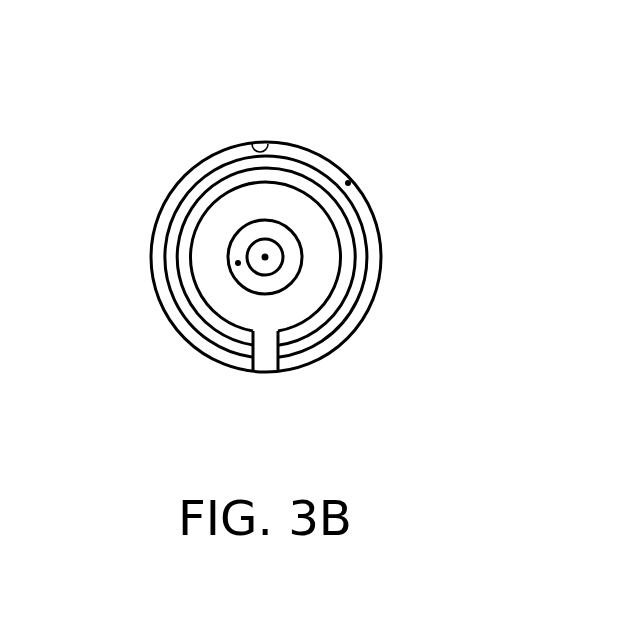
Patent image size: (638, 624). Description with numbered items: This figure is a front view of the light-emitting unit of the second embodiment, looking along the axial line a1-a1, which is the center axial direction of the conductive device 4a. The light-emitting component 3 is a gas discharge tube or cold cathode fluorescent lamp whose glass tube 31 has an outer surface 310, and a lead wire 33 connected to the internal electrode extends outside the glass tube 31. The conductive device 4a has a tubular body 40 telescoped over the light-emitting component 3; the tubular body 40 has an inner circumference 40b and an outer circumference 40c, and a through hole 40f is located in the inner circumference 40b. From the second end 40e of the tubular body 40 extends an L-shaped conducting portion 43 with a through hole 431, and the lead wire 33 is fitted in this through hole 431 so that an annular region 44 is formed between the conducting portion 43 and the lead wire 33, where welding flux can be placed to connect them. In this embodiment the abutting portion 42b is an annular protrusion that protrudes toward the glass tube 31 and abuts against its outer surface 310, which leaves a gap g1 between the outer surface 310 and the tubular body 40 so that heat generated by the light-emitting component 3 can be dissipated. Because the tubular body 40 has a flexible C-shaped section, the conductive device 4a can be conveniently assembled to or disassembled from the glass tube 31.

The conductive device 4a is at (220, 143).
The light-emitting component 3 is at (202, 182).
The tubular body 40 is at (329, 357).
The glass tube 31 is at (325, 166).
The outer circumference 40c is at (297, 178).
The outer surface 310 is at (188, 299).
The conducting portion 43 is at (267, 348).
The inner circumference 40b is at (269, 158).
The second end 40e is at (348, 183).
The through hole 40f is at (175, 400).
The gap g1 is at (175, 400).
The abutting portion 42b is at (226, 346).
The through hole 431 is at (252, 288).
The annular region 44 is at (238, 263).
The lead wire 33 is at (272, 263).
The axial line a1-a1 is at (265, 257).